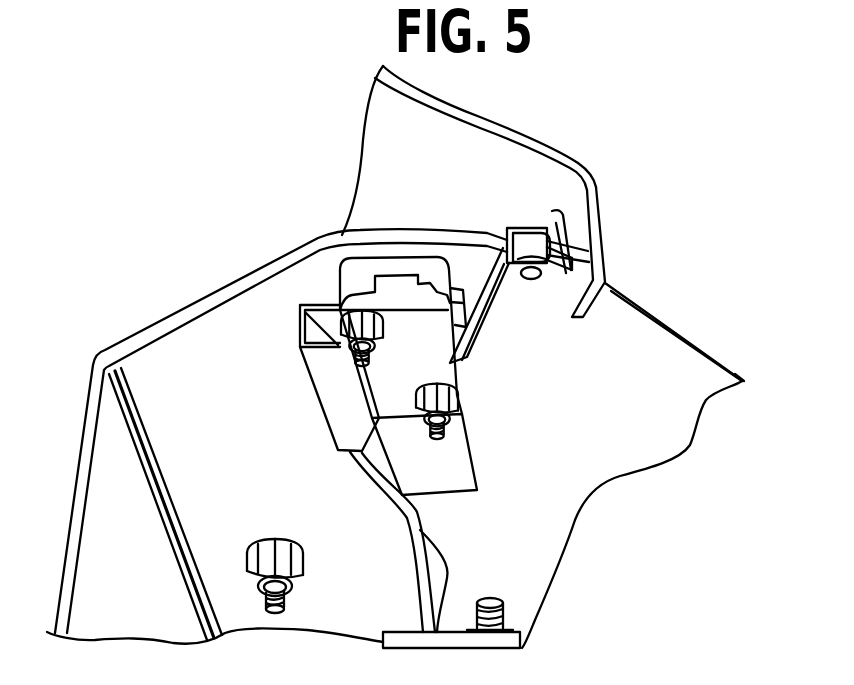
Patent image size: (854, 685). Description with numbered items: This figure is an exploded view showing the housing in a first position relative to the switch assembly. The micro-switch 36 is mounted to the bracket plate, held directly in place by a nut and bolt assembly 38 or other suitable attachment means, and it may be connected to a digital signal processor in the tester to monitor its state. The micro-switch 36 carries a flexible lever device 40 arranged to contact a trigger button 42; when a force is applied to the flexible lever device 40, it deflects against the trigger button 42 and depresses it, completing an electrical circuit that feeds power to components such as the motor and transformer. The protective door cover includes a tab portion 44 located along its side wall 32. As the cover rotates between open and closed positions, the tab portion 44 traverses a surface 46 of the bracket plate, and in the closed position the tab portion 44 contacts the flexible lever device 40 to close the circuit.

The side wall 32 is at (400, 173).
The micro-switch 36 is at (380, 397).
The nut and bolt assembly 38 is at (453, 418).
The flexible lever device 40 is at (537, 253).
The trigger button 42 is at (468, 300).
The tab portion 44 is at (591, 190).
The surface 46 is at (633, 307).